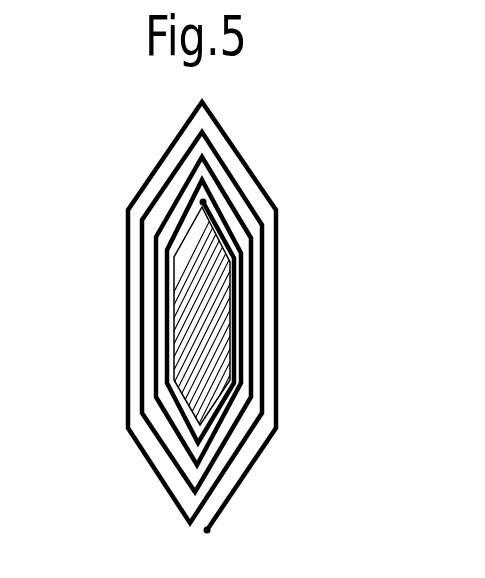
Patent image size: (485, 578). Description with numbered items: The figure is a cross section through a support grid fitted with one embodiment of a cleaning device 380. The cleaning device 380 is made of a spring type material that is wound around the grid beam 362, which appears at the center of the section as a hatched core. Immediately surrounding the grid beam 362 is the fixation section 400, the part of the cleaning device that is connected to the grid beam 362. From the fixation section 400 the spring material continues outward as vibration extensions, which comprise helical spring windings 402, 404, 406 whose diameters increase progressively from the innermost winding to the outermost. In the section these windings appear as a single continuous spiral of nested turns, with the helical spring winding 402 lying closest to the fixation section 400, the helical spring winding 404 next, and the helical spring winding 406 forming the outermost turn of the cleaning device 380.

The grid beam 362 is at (207, 297).
The cleaning device 380 is at (197, 318).
The fixation section 400 is at (166, 322).
The helical spring winding 402 is at (155, 285).
The helical spring winding 404 is at (141, 245).
The helical spring winding 406 is at (131, 208).